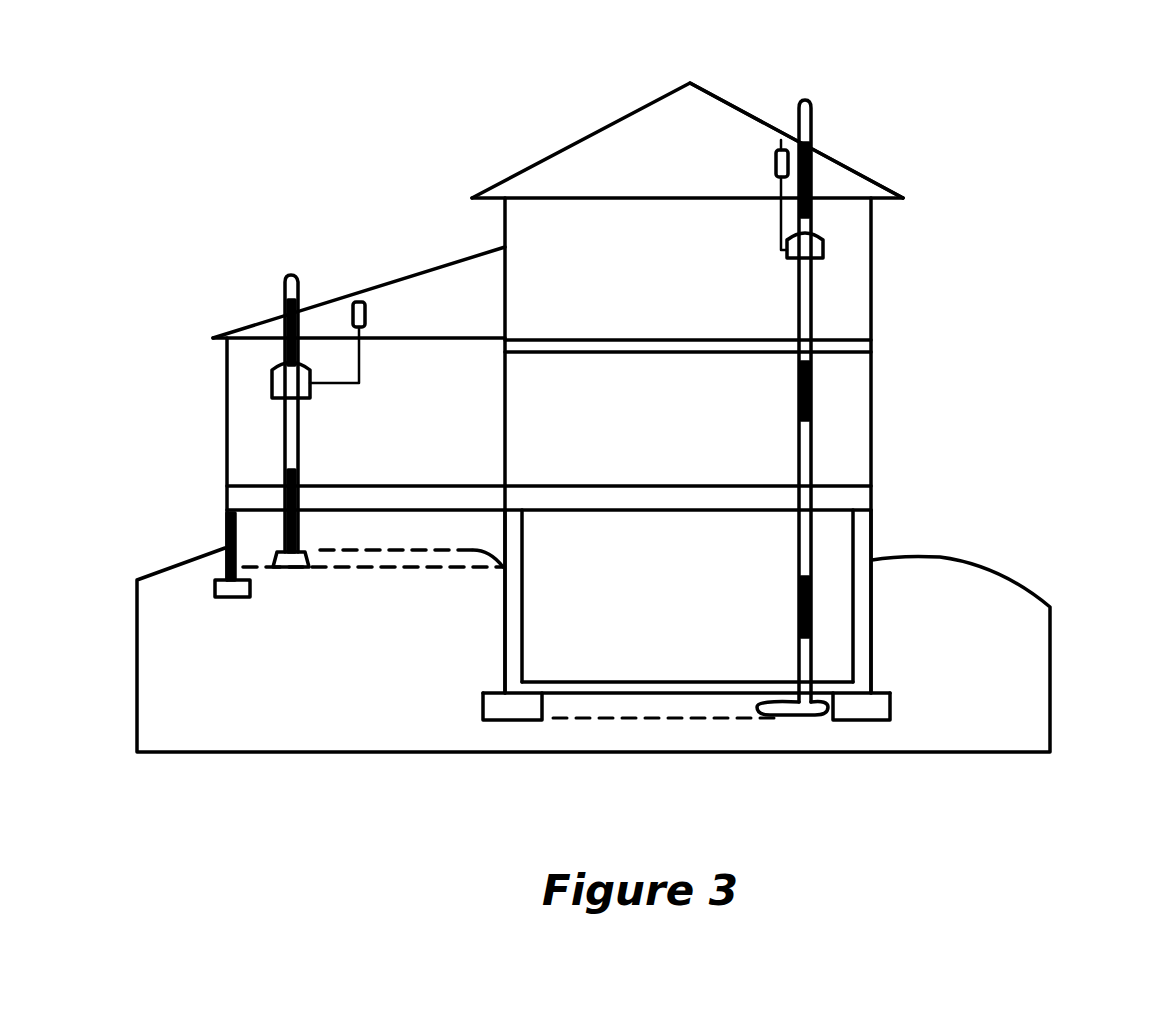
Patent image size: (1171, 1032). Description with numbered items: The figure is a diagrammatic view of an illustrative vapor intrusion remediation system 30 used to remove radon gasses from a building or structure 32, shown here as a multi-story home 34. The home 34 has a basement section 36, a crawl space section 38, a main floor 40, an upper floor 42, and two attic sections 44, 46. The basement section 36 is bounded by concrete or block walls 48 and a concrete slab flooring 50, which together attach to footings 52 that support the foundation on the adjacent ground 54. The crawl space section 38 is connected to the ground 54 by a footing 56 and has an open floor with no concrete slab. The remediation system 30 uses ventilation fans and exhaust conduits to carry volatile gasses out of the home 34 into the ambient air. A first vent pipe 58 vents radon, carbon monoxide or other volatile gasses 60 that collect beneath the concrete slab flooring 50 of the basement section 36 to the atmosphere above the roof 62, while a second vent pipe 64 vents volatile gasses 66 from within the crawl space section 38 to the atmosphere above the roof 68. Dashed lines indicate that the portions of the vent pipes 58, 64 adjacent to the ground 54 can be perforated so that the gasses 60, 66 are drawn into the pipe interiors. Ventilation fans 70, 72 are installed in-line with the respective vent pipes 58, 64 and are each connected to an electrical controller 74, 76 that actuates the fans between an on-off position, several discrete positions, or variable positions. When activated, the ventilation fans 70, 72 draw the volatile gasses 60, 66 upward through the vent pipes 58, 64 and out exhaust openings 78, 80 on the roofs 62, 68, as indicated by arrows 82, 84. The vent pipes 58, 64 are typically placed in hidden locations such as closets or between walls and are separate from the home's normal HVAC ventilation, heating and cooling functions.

The vapor intrusion remediation system 30 is at (440, 112).
The building or structure 32 is at (905, 388).
The multi-story home 34 is at (872, 447).
The basement section 36 is at (655, 611).
The crawl space section 38 is at (415, 543).
The main floor 40 is at (415, 435).
The upper floor 42 is at (655, 281).
The attic section 44 is at (655, 163).
The attic section 46 is at (417, 318).
The concrete or block walls 48 is at (506, 643).
The concrete slab flooring 50 is at (727, 687).
The footings 52 is at (510, 710).
The ground 54 is at (147, 670).
The footing 56 is at (215, 585).
The first vent pipe 58 is at (812, 301).
The volatile gasses 60 is at (627, 707).
The roof 62 is at (833, 160).
The second vent pipe 64 is at (285, 448).
The volatile gasses 66 is at (417, 573).
The roof 68 is at (325, 292).
The ventilation fan 70 is at (823, 243).
The ventilation fan 72 is at (272, 383).
The electrical controller 74 is at (780, 147).
The electrical controller 76 is at (362, 300).
The exhaust opening 78 is at (807, 100).
The exhaust opening 80 is at (285, 278).
The arrows 82 is at (813, 191).
The arrows 84 is at (288, 330).